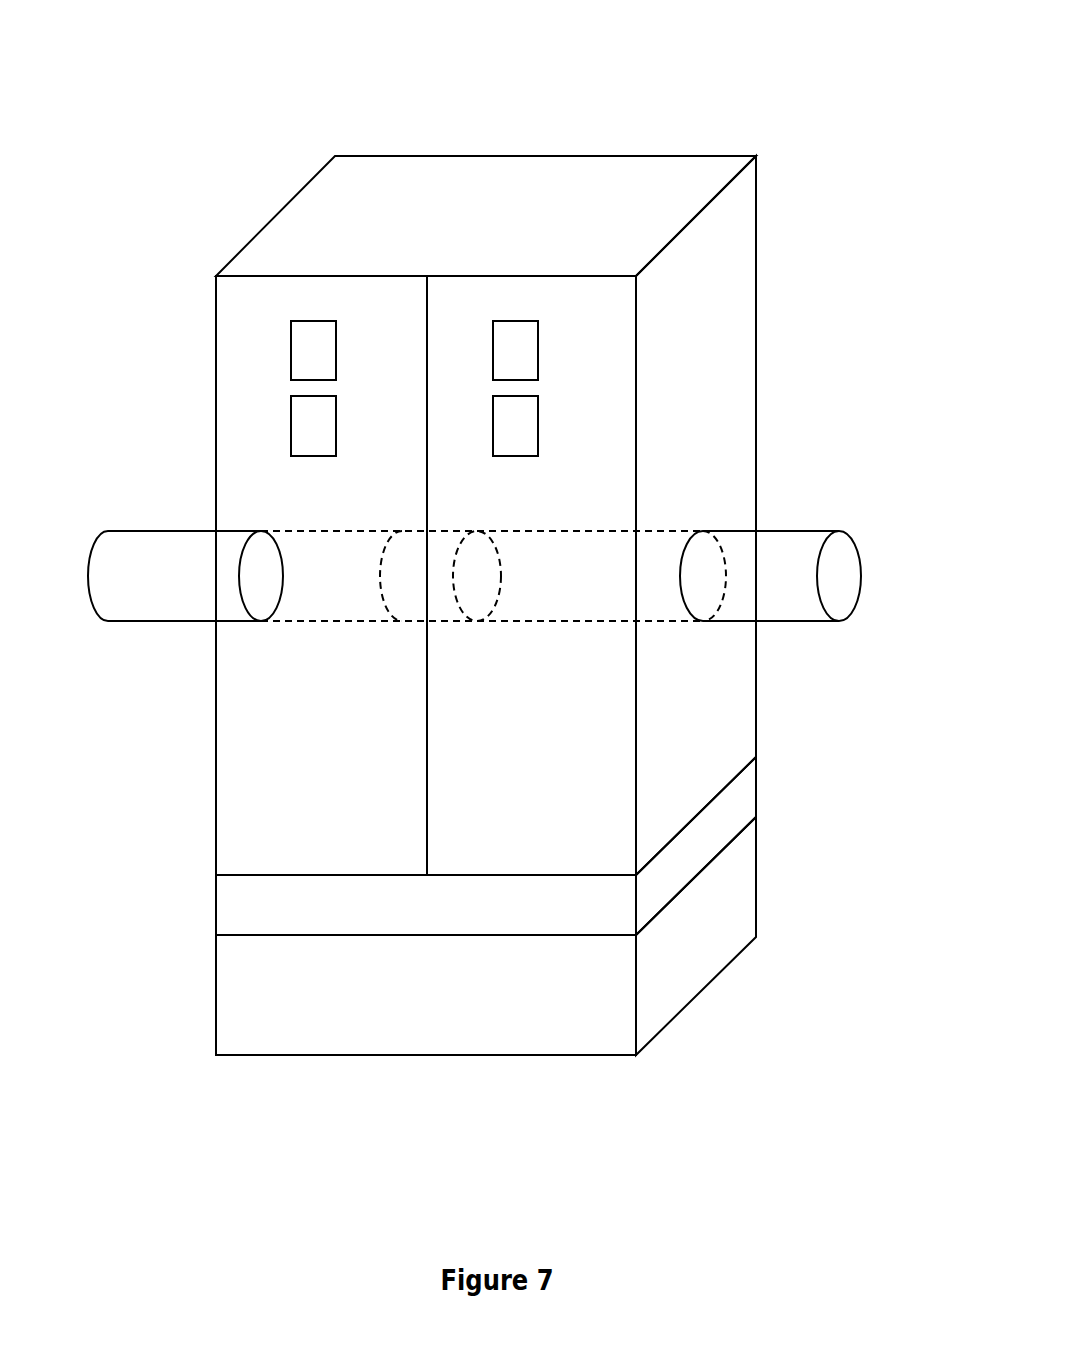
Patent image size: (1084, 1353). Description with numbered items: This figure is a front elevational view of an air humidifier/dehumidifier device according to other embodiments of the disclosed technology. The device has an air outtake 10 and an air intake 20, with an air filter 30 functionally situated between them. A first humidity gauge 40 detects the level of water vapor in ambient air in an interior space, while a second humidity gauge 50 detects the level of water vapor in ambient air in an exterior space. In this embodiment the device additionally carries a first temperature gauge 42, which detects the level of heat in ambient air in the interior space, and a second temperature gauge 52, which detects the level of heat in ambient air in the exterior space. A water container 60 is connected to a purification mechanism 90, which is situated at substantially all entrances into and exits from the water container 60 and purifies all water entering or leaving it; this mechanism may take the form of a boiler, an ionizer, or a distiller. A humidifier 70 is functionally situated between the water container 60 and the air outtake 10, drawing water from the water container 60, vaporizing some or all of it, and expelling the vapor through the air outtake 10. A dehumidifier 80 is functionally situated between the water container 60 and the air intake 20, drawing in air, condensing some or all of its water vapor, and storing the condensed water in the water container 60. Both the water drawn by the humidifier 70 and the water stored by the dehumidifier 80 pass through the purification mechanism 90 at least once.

The air outtake 10 is at (843, 567).
The air intake 20 is at (145, 543).
The air filter 30 is at (485, 579).
The first humidity gauge 40 is at (323, 406).
The first temperature gauge 42 is at (323, 335).
The second humidity gauge 50 is at (527, 438).
The second temperature gauge 52 is at (527, 335).
The water container 60 is at (743, 897).
The humidifier 70 is at (395, 178).
The dehumidifier 80 is at (576, 196).
The purification mechanism 90 is at (745, 803).